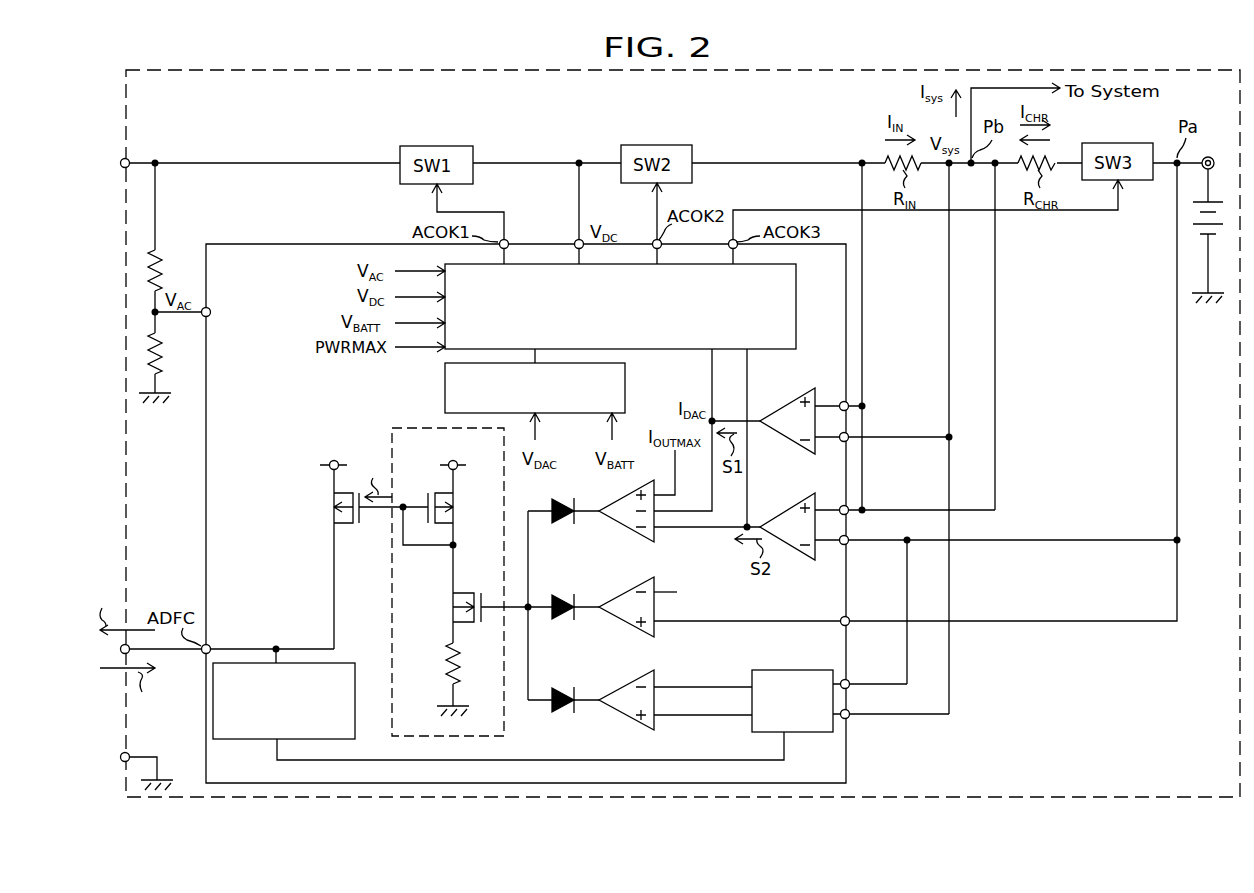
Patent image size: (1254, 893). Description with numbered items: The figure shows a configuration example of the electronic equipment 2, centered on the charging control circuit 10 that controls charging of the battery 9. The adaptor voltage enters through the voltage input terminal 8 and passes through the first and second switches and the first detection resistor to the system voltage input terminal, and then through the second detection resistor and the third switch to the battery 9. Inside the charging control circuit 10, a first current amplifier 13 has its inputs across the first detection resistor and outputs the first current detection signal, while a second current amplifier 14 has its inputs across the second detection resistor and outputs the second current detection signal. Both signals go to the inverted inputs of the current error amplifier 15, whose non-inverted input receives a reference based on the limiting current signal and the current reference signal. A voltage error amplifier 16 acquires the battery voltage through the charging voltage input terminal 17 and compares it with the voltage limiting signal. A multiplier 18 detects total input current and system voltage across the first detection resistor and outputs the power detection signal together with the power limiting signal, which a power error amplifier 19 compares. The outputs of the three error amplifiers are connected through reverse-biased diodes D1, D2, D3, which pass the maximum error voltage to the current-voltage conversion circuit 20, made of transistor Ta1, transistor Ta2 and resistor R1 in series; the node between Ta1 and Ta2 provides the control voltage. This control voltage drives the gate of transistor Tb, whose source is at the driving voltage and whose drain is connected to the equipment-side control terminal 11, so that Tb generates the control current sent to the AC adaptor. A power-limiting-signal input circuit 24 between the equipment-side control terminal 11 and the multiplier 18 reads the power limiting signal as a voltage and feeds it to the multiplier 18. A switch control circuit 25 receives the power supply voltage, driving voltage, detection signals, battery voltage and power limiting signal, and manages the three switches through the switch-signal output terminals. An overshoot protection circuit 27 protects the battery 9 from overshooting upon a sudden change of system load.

The electronic equipment 2 is at (127, 456).
The voltage input terminal 8 is at (128, 161).
The battery 9 is at (1211, 200).
The charging control circuit 10 is at (847, 765).
The equipment-side control terminal 11 is at (121, 650).
The first current amplifier 13 is at (791, 403).
The second current amplifier 14 is at (794, 508).
The current error amplifier 15 is at (615, 530).
The voltage error amplifier 16 is at (616, 625).
The charging voltage input terminal 17 is at (840, 618).
The multiplier 18 is at (784, 670).
The power error amplifier 19 is at (616, 718).
The current-voltage conversion circuit 20 is at (423, 582).
The power-limiting-signal input circuit 24 is at (240, 739).
The switch control circuit 25 is at (796, 312).
The overshoot protection circuit 27 is at (445, 398).
The diode D1 is at (561, 524).
The diode D2 is at (566, 620).
The diode D3 is at (561, 713).
The transistor Ta1 is at (435, 477).
The transistor Ta2 is at (465, 593).
The transistor Tb is at (353, 524).
The resistor R1 is at (463, 662).